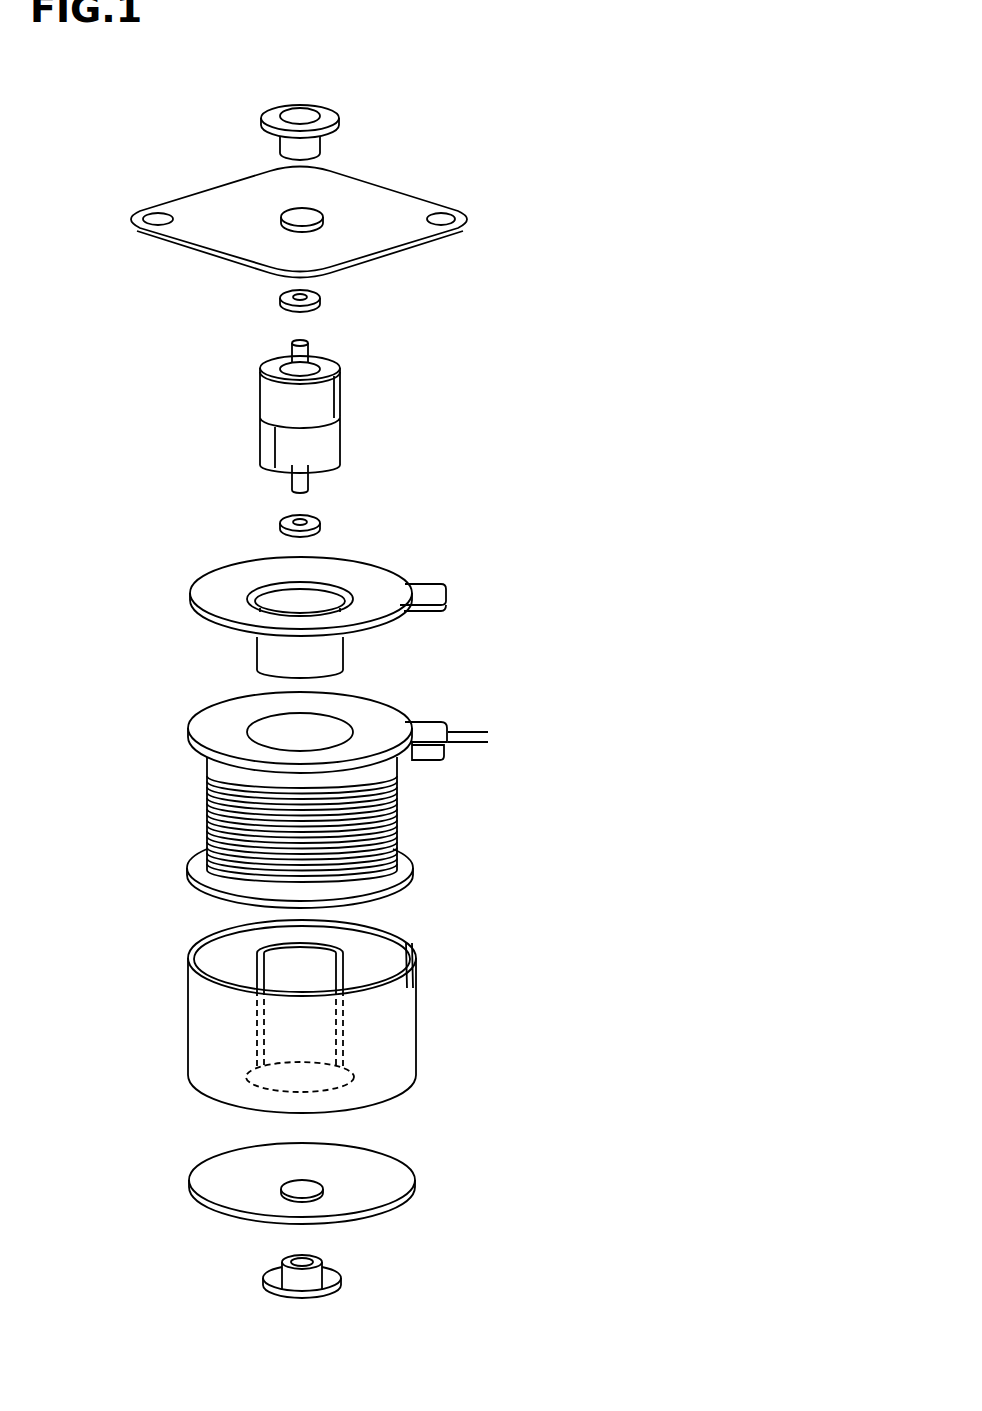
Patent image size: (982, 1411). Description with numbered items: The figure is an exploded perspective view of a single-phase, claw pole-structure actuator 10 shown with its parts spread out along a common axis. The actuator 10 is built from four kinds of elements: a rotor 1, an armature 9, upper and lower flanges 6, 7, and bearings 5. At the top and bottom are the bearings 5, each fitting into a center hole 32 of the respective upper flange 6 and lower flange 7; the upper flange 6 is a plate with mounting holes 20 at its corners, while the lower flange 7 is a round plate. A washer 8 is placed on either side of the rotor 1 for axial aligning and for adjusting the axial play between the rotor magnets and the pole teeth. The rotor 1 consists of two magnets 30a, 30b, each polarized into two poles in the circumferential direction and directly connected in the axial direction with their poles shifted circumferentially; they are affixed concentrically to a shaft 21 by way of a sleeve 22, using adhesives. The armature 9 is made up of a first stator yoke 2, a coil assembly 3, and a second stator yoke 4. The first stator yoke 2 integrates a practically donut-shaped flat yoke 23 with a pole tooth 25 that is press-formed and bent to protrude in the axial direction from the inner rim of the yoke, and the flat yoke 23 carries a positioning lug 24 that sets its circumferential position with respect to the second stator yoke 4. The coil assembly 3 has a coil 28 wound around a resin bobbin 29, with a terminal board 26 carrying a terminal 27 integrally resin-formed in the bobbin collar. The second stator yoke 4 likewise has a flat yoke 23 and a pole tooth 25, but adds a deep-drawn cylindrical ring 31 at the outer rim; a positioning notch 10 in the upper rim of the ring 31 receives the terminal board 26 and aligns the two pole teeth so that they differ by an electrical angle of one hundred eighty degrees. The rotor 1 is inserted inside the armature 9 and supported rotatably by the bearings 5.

The rotor 1 is at (574, 348).
The first stator yoke 2 is at (639, 558).
The coil assembly 3 is at (616, 697).
The second stator yoke 4 is at (631, 925).
The bearings 5 is at (320, 110).
The upper flange 6 is at (337, 209).
The lower flange 7 is at (393, 1193).
The washer 8 is at (322, 297).
The armature 9 is at (190, 1103).
The actuator 10 is at (795, 83).
The mounting hole 20 is at (162, 213).
The shaft 21 is at (309, 350).
The sleeve 22 is at (314, 374).
The flat yoke 23 is at (362, 577).
The positioning lug 24 is at (437, 593).
The pole tooth 25 is at (330, 653).
The terminal board 26 is at (428, 725).
The terminal 27 is at (495, 728).
The coil 28 is at (373, 828).
The bobbin 29 is at (397, 875).
The magnet 30a is at (330, 402).
The magnet 30b is at (330, 438).
The ring 31 is at (393, 1032).
The center hole 32 is at (303, 208).